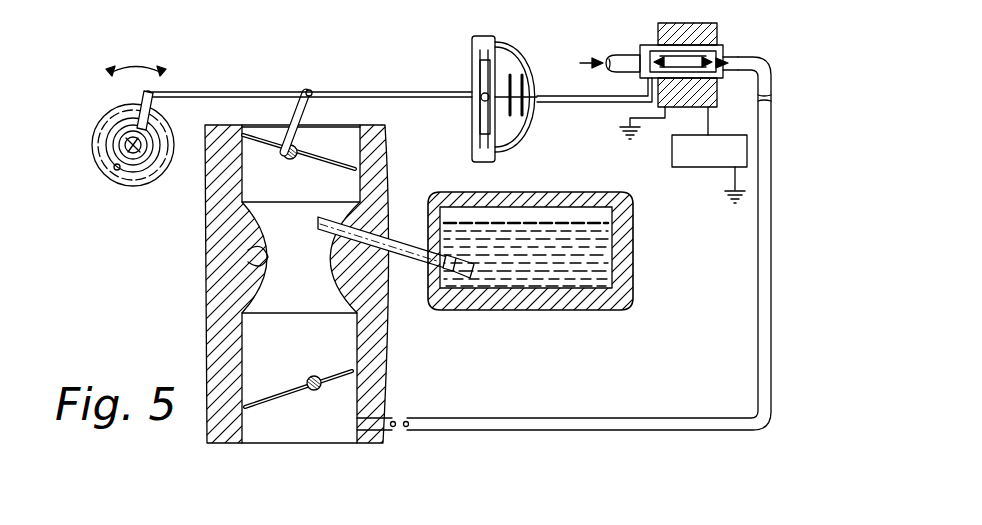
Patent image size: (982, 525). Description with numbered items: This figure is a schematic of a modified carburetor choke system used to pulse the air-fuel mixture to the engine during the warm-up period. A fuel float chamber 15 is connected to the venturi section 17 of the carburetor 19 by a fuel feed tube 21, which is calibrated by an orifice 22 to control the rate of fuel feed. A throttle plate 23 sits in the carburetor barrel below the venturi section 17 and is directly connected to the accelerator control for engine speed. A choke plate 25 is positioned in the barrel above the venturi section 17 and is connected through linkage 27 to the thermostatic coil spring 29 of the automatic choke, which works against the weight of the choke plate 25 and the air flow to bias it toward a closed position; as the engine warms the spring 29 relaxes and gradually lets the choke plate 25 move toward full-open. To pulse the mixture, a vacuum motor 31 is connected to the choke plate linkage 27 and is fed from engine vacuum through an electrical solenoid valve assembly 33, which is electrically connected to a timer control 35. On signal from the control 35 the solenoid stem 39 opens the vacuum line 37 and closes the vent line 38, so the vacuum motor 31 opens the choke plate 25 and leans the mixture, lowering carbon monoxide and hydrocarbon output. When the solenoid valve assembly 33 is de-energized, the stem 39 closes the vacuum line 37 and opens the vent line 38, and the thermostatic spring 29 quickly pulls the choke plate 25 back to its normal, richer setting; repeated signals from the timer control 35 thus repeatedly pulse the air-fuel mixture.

The fuel float chamber 15 is at (632, 242).
The venturi section 17 is at (262, 262).
The carburetor 19 is at (200, 302).
The fuel feed tube 21 is at (406, 250).
The orifice 22 is at (460, 276).
The throttle plate 23 is at (282, 395).
The choke plate 25 is at (352, 168).
The linkage 27 is at (302, 118).
The thermostatic coil spring 29 is at (118, 170).
The vacuum motor 31 is at (512, 62).
The electrical solenoid valve assembly 33 is at (686, 105).
The timer control 35 is at (716, 167).
The vacuum line 37 is at (771, 178).
The vent line 38 is at (628, 52).
The solenoid stem 39 is at (722, 56).